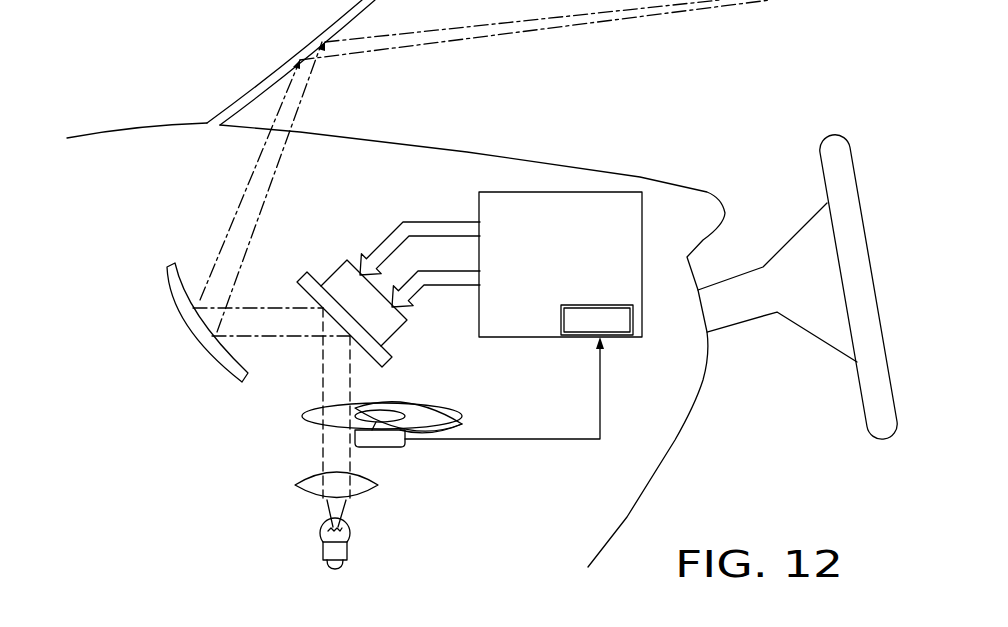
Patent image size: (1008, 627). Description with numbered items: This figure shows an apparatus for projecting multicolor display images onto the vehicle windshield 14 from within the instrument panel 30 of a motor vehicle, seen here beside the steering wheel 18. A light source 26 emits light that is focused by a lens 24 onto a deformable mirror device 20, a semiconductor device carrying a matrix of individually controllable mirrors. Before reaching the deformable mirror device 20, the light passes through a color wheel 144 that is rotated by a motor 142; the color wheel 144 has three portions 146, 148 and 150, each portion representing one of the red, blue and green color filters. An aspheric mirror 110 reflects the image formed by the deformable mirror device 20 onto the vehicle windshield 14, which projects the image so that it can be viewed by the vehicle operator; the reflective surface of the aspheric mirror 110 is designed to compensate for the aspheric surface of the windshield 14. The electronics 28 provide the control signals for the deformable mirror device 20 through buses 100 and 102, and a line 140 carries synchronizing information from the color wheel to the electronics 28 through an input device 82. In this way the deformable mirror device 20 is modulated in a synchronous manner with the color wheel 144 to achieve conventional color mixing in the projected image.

The vehicle windshield 14 is at (262, 80).
The steering wheel 18 is at (850, 232).
The deformable mirror device 20 is at (347, 285).
The lens 24 is at (308, 490).
The light source 26 is at (323, 551).
The electronics 28 is at (573, 230).
The instrument panel 30 is at (670, 436).
The input device 82 is at (621, 339).
The bus 100 is at (398, 227).
The bus 102 is at (460, 277).
The aspheric mirror 110 is at (192, 318).
The line 140 is at (523, 440).
The motor 142 is at (386, 446).
The color wheel 144 is at (432, 430).
The portion 146 is at (438, 417).
The portion 148 is at (404, 407).
The portion 150 is at (308, 413).